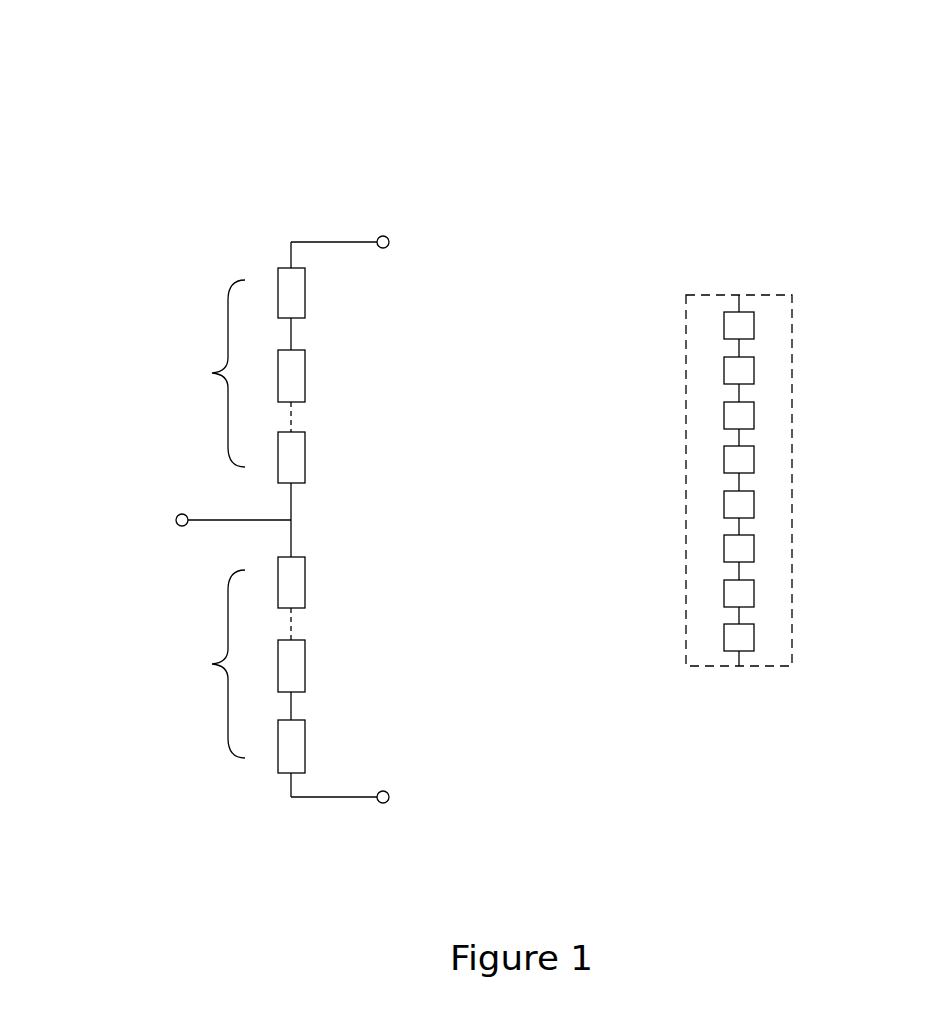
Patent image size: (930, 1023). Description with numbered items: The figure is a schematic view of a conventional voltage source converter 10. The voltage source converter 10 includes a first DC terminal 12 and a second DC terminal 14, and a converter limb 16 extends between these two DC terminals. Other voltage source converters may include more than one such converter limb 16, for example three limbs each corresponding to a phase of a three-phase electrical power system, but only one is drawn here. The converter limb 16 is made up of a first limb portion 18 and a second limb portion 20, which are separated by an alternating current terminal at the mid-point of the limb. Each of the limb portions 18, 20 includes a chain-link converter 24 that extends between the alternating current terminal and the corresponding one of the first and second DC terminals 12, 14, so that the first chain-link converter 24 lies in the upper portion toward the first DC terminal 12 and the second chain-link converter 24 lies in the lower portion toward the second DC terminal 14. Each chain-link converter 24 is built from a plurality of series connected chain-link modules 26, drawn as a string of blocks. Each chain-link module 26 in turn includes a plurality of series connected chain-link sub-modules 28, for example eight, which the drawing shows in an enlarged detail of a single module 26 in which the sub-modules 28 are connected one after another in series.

The voltage source converter 10 is at (176, 104).
The first DC terminal 12 is at (388, 237).
The second DC terminal 14 is at (390, 792).
The converter limb 16 is at (305, 835).
The first limb portion 18 is at (345, 378).
The second limb portion 20 is at (335, 651).
The chain-link converter 24 is at (208, 519).
The chain-link module 26 is at (686, 368).
The chain-link sub-module 28 is at (747, 325).